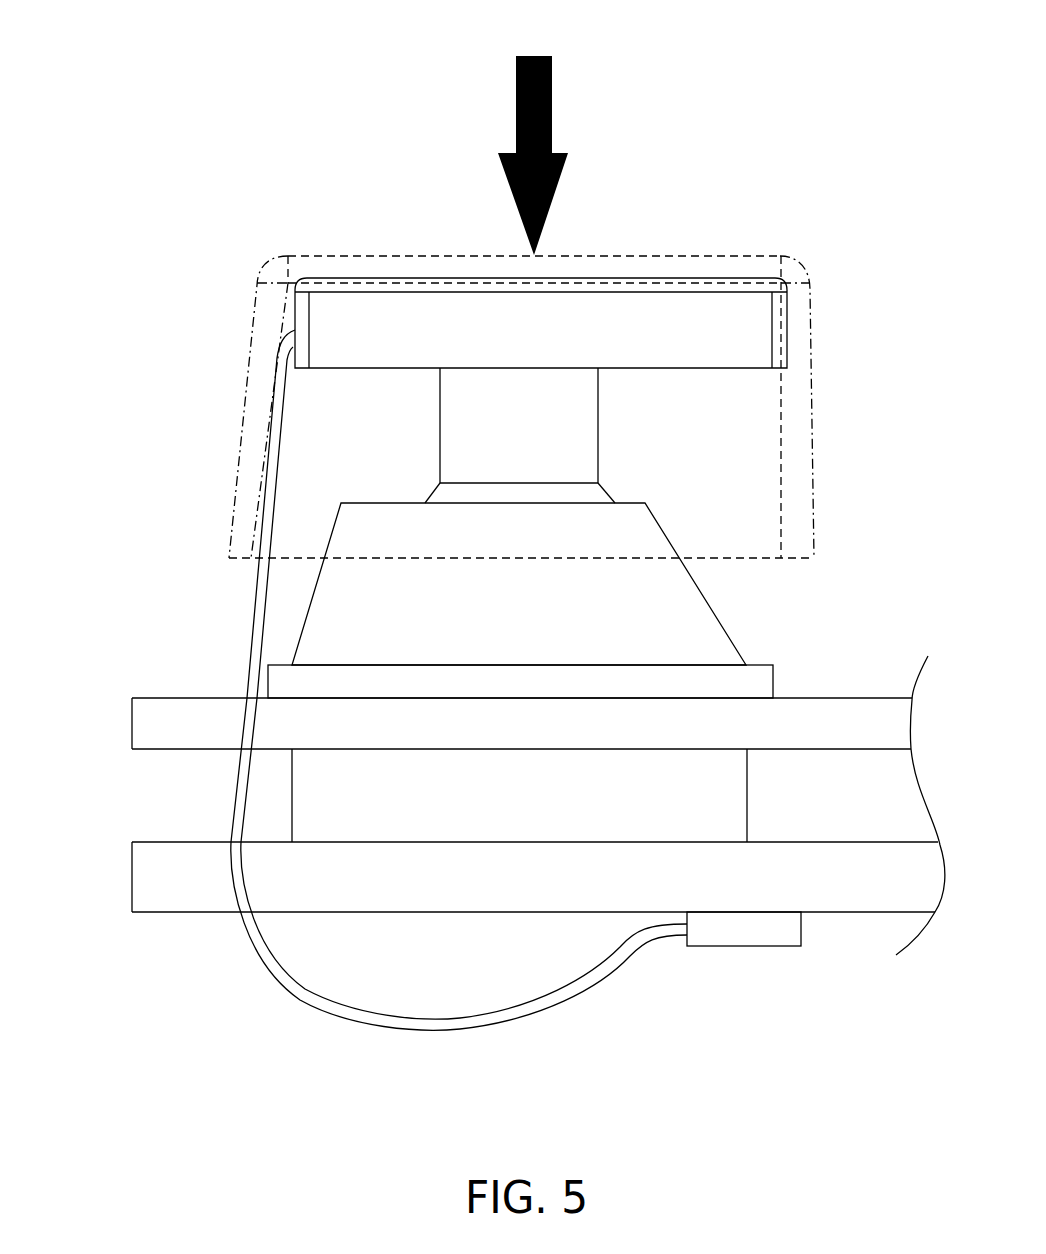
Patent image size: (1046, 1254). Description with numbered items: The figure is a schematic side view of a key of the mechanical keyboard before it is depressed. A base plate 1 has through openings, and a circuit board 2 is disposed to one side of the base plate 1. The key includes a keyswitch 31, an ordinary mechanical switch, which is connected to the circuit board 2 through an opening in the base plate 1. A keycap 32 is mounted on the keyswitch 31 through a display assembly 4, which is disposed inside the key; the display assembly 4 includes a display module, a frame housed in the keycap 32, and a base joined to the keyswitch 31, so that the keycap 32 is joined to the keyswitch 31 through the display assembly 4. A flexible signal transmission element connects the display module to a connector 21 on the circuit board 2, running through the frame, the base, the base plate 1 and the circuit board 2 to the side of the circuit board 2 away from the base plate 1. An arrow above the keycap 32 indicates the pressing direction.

The base plate 1 is at (175, 698).
The circuit board 2 is at (164, 912).
The connector 21 is at (777, 946).
The keyswitch 31 is at (722, 622).
The keycap 32 is at (812, 362).
The display assembly 4 is at (800, 297).